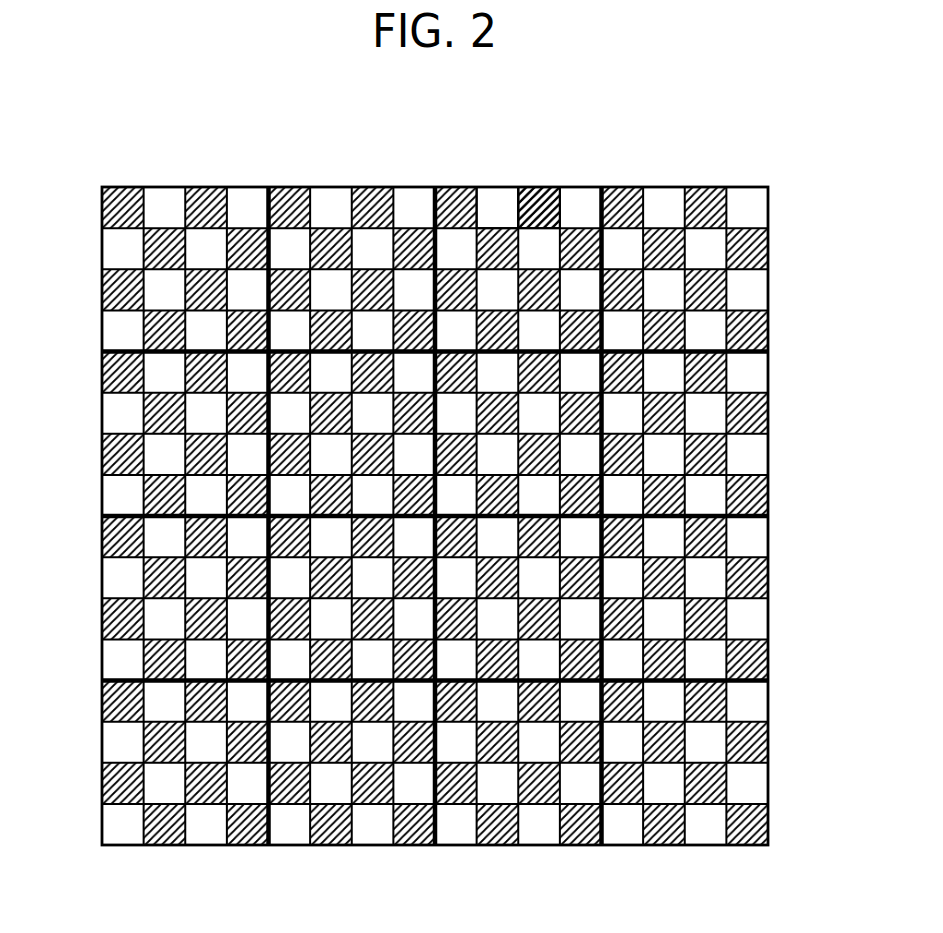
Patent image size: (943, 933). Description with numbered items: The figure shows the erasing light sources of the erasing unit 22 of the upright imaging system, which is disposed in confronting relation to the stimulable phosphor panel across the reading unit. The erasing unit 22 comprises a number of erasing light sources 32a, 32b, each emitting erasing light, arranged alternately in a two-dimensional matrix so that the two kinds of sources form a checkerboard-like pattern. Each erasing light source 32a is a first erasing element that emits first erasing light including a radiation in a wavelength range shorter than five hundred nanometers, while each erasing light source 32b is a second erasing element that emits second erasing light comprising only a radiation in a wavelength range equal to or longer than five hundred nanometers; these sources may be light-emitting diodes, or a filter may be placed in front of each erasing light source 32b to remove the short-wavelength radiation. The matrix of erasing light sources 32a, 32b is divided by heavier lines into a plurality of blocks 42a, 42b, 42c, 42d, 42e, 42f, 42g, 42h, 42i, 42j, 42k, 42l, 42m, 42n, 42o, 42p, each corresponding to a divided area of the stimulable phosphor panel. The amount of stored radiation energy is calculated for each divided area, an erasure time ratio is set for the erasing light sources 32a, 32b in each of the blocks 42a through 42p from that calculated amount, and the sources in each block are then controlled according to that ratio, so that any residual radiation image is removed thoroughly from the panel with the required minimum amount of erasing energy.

The erasing unit 22 is at (690, 95).
The erasing light source 32a is at (490, 200).
The erasing light source 32b is at (530, 200).
The block 42a is at (182, 183).
The block 42b is at (347, 183).
The block 42c is at (558, 181).
The block 42d is at (675, 181).
The block 42e is at (100, 442).
The block 42f is at (267, 413).
The block 42g is at (603, 410).
The block 42h is at (769, 427).
The block 42i is at (100, 607).
The block 42j is at (267, 620).
The block 42k is at (603, 617).
The block 42l is at (771, 592).
The block 42m is at (195, 851).
The block 42n is at (358, 851).
The block 42o is at (523, 849).
The block 42p is at (688, 849).